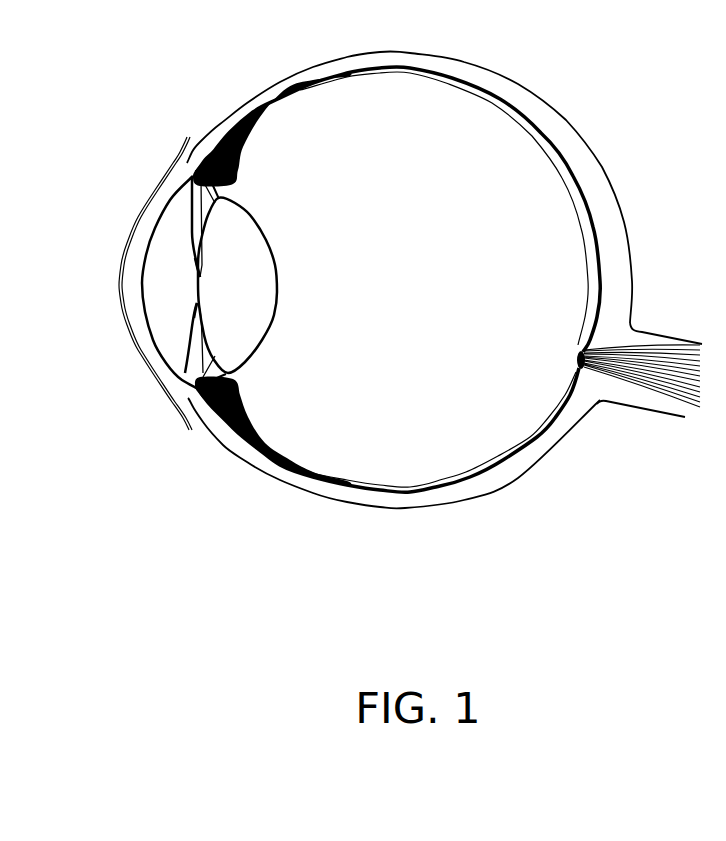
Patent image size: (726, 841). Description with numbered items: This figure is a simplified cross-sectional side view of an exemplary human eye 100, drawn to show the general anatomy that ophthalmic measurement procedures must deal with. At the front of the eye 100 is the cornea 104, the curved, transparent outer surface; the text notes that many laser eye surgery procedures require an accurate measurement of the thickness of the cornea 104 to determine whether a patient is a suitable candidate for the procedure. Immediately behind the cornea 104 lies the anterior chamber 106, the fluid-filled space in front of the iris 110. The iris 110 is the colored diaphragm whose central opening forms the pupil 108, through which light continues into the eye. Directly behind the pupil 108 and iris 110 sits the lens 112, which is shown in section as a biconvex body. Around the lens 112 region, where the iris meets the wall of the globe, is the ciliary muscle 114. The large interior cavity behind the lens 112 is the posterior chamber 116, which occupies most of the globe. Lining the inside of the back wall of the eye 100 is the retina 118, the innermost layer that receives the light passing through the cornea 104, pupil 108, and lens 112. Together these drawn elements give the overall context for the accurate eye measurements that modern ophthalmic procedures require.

The human eye 100 is at (465, 606).
The cornea 104 is at (137, 246).
The anterior chamber 106 is at (187, 228).
The pupil 108 is at (197, 290).
The iris 110 is at (197, 361).
The lens 112 is at (278, 302).
The ciliary muscle 114 is at (233, 436).
The posterior chamber 116 is at (381, 249).
The retina 118 is at (585, 279).